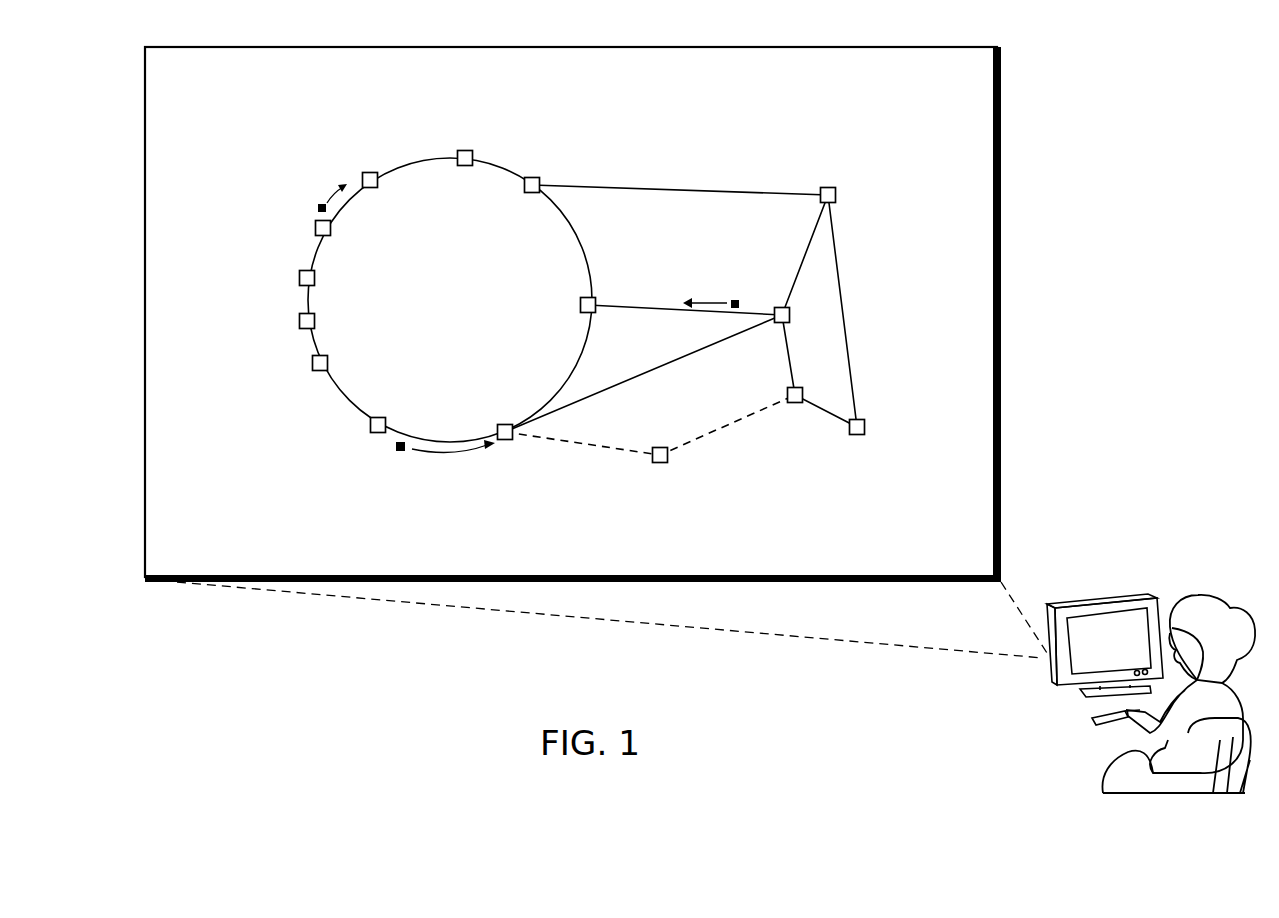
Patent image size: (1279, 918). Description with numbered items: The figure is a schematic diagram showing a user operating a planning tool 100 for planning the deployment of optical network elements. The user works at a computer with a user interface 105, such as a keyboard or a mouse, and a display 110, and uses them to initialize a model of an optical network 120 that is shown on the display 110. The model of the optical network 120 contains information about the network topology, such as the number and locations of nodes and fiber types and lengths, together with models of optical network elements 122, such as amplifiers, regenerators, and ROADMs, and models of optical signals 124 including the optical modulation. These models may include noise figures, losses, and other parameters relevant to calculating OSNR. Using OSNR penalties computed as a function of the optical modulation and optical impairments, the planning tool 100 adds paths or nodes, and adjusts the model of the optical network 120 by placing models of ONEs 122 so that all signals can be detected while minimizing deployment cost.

The planning tool 100 is at (1092, 595).
The user interface 105 is at (1092, 718).
The display 110 is at (1001, 150).
The model of an optical network 120 is at (526, 119).
The model of an optical network element (ONE) 122 is at (370, 427).
The model of an optical signal 124 is at (400, 452).